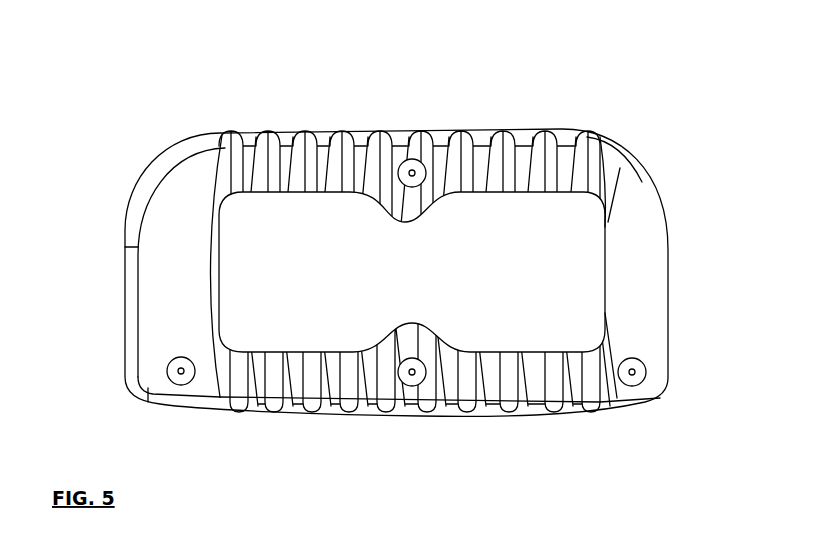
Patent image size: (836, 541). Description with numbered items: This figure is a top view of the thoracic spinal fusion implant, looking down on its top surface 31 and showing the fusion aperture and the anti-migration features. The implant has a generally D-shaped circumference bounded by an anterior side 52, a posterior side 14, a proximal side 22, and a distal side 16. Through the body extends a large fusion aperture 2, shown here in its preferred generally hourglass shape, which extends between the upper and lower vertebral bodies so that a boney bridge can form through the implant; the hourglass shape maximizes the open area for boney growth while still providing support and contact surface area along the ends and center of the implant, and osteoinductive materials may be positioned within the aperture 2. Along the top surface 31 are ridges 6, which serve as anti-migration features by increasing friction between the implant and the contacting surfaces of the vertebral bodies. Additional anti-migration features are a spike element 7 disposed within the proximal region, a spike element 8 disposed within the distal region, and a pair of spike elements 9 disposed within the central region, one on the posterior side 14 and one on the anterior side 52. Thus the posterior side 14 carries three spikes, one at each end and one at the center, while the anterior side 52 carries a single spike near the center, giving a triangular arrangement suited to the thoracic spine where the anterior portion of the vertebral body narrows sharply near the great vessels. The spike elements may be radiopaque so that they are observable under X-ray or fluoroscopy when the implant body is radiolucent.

The aperture 2 is at (520, 240).
The ridges 6 is at (503, 393).
The spike element 7 is at (180, 385).
The spike element 8 is at (643, 385).
The spike elements 9 is at (423, 159).
The posterior side 14 is at (344, 432).
The distal side 16 is at (695, 262).
The proximal side 22 is at (108, 321).
The top surface 31 is at (600, 134).
The anterior side 52 is at (297, 130).